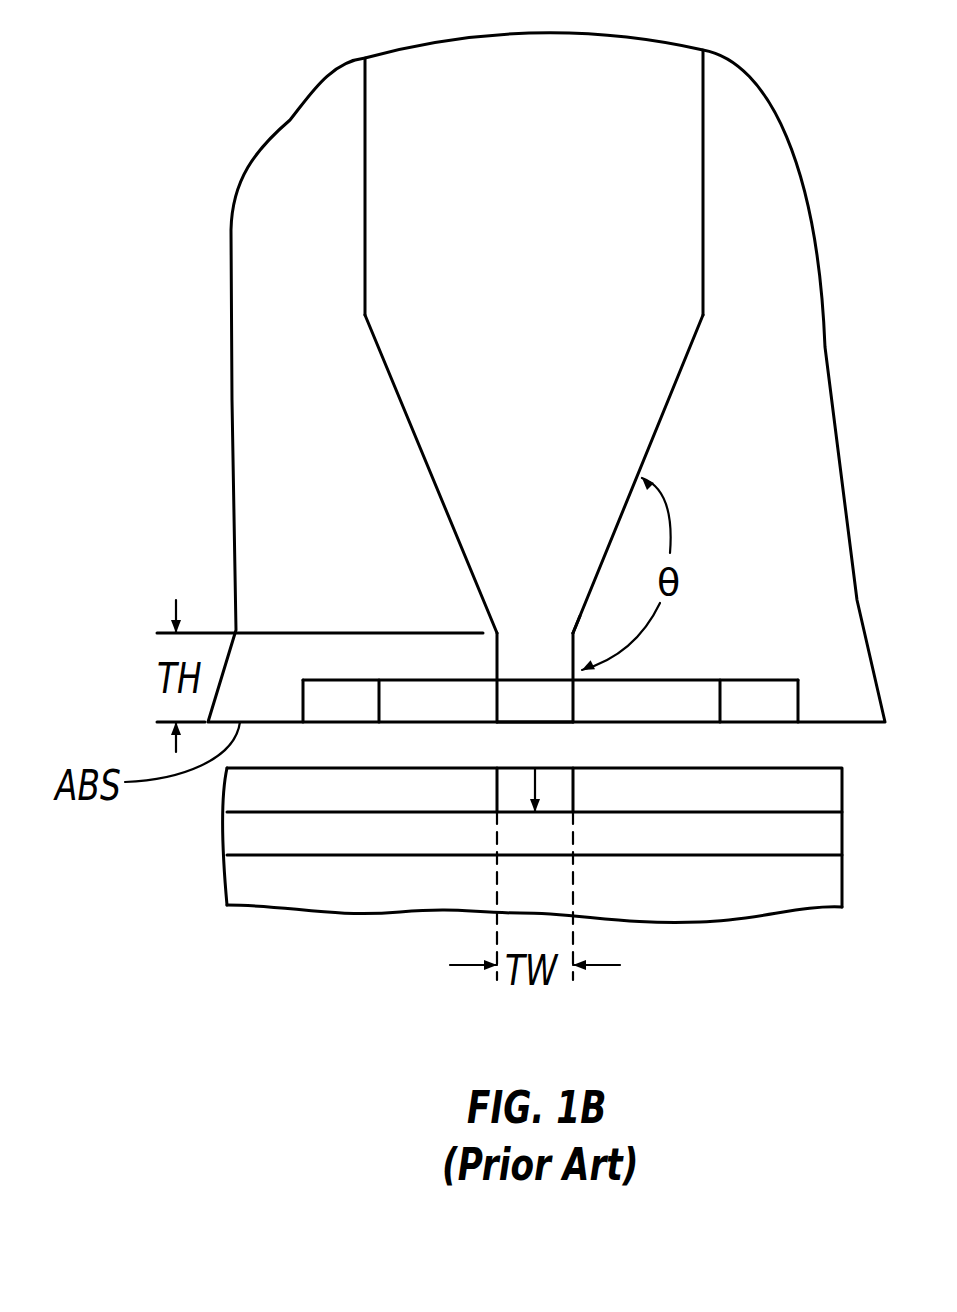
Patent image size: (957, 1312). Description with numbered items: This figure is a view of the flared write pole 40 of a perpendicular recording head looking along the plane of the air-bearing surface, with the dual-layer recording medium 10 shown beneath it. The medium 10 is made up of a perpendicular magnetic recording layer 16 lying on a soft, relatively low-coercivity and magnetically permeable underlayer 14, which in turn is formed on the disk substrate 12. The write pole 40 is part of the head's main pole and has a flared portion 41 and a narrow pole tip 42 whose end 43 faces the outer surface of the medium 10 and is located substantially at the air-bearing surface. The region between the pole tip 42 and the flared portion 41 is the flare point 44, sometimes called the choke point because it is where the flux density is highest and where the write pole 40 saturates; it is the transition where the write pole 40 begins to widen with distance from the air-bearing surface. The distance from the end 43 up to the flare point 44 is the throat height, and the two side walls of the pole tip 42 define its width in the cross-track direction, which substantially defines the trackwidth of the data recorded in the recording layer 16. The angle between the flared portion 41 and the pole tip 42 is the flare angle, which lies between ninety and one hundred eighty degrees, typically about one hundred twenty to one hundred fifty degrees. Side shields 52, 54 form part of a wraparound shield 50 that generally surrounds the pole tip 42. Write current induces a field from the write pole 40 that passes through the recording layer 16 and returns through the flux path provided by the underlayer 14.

The medium 10 is at (178, 963).
The disk substrate 12 is at (233, 882).
The soft underlayer 14 is at (233, 834).
The recording layer 16 is at (233, 789).
The write pole 40 is at (388, 187).
The flared portion 41 is at (480, 527).
The pole tip 42 is at (513, 638).
The pole tip end 43 is at (525, 722).
The flare point 44 is at (575, 636).
The trailing shield 50 is at (673, 687).
The side shield 52 is at (313, 706).
The side shield 54 is at (760, 687).